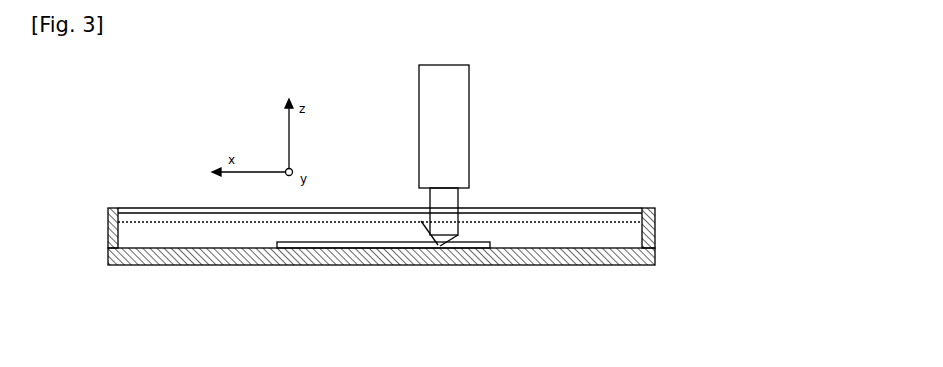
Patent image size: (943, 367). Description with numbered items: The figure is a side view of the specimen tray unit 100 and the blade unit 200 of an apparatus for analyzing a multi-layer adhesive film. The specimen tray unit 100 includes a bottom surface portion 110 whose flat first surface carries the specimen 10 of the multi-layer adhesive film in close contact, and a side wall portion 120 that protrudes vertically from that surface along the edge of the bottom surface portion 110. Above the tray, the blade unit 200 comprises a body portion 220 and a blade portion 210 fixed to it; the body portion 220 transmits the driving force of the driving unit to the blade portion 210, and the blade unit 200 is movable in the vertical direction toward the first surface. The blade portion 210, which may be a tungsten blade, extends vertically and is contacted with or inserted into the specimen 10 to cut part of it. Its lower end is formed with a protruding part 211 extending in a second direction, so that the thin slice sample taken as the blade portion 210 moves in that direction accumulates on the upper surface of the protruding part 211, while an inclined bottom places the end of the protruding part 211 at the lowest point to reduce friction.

The specimen of a multi-layer structure adhesive film 10 is at (320, 248).
The specimen tray unit 100 is at (459, 247).
The bottom surface portion 110 is at (655, 268).
The side wall portion 120 is at (655, 233).
The blade unit 200 is at (522, 193).
The blade portion 210 is at (458, 207).
The protruding part 211 is at (430, 248).
The body portion 220 is at (469, 105).